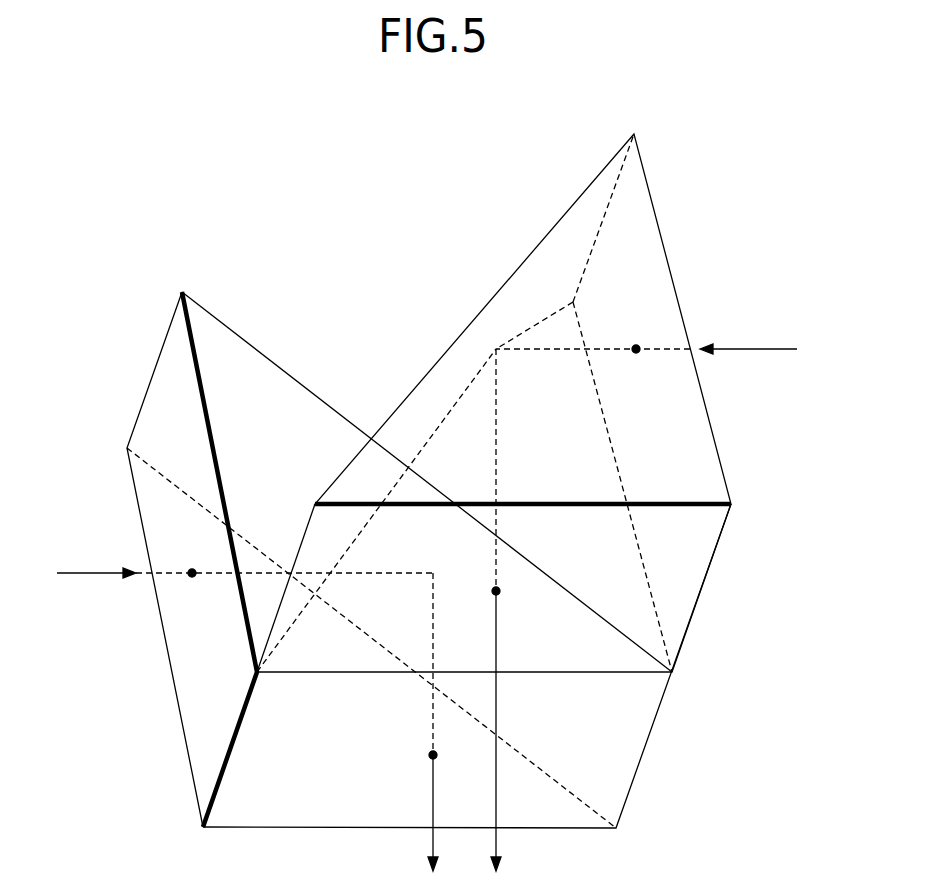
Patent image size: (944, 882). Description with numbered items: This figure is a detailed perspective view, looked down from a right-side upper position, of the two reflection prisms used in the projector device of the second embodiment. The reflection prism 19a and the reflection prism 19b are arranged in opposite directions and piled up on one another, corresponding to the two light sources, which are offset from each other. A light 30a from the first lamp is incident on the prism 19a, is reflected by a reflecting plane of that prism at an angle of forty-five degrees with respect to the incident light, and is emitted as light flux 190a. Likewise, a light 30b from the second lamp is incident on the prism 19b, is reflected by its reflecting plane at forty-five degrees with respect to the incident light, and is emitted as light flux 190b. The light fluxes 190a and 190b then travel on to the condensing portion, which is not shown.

The reflection prism 19a is at (640, 232).
The reflection prism 19b is at (157, 383).
The light 30a is at (760, 349).
The light 30b is at (82, 573).
The light flux 190a is at (497, 843).
The light flux 190b is at (432, 843).